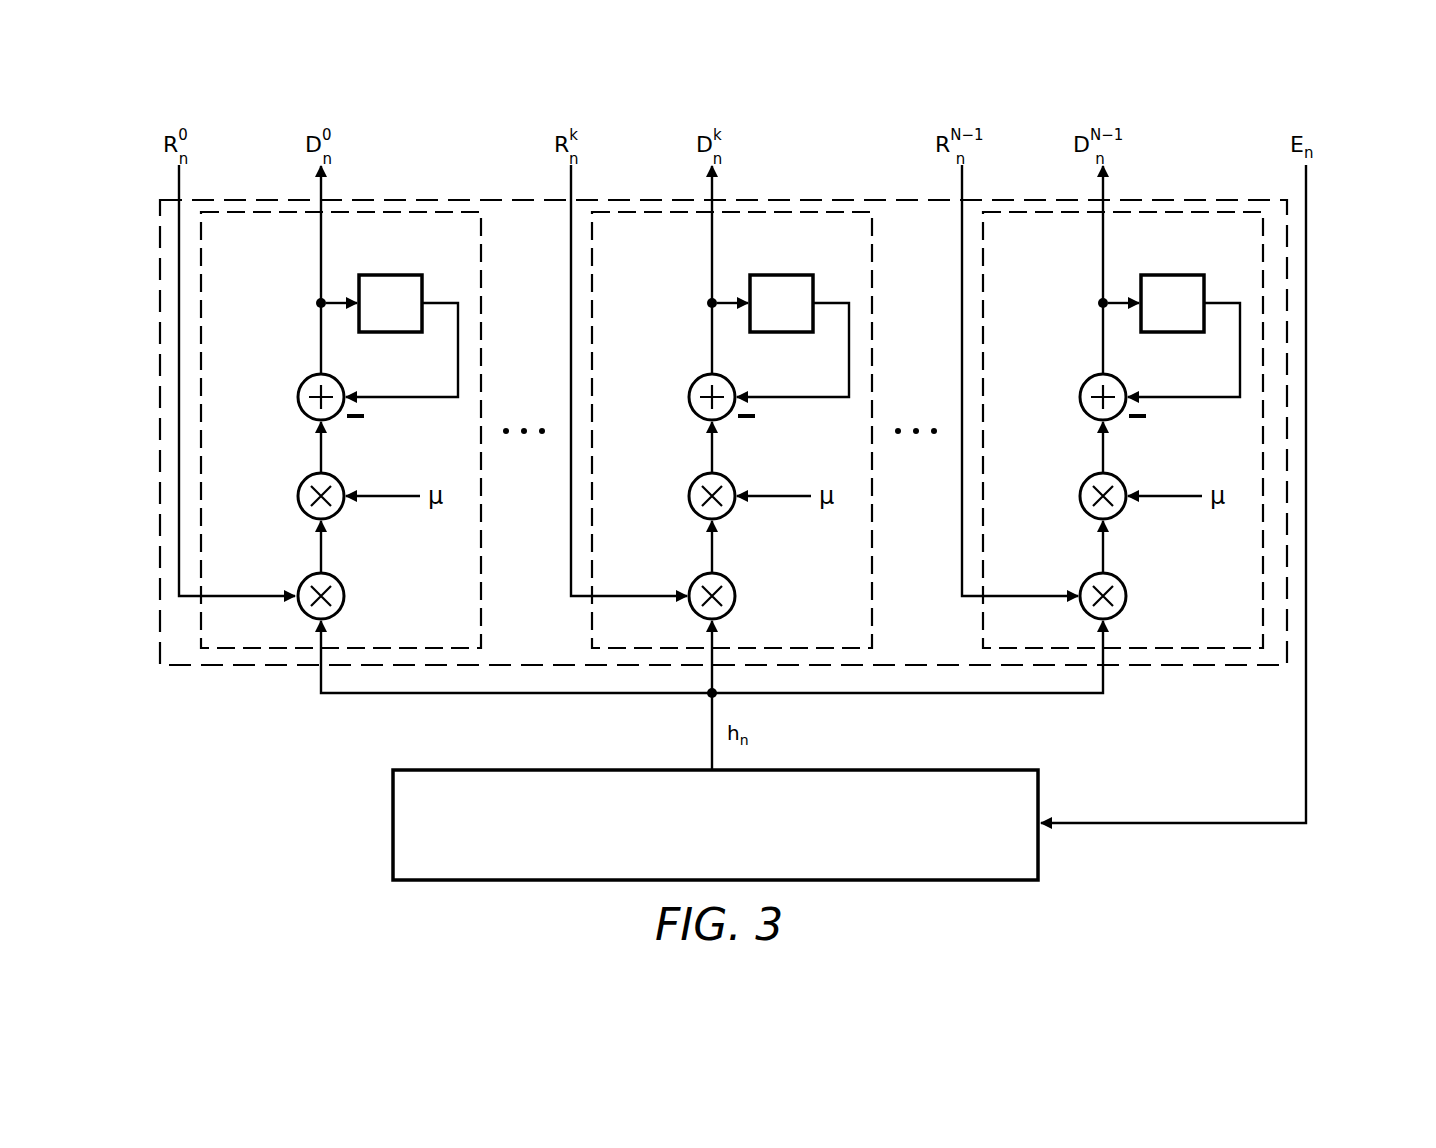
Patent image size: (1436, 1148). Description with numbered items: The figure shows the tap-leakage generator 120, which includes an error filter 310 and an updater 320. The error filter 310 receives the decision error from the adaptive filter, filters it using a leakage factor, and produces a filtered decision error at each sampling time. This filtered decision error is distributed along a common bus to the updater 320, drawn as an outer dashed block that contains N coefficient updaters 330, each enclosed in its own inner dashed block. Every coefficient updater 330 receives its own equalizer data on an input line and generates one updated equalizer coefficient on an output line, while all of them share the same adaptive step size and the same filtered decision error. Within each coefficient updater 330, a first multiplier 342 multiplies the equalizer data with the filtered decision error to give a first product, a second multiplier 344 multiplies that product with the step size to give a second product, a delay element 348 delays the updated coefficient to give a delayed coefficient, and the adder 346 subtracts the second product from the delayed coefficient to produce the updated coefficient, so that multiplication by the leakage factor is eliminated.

The tap-leakage generator 120 is at (1330, 95).
The error filter 310 is at (1012, 778).
The updater 320 is at (488, 207).
The coefficient updater 330 is at (468, 252).
The first multiplier 342 is at (338, 612).
The second multiplier 344 is at (300, 496).
The adder 346 is at (300, 392).
The delay element 348 is at (407, 279).